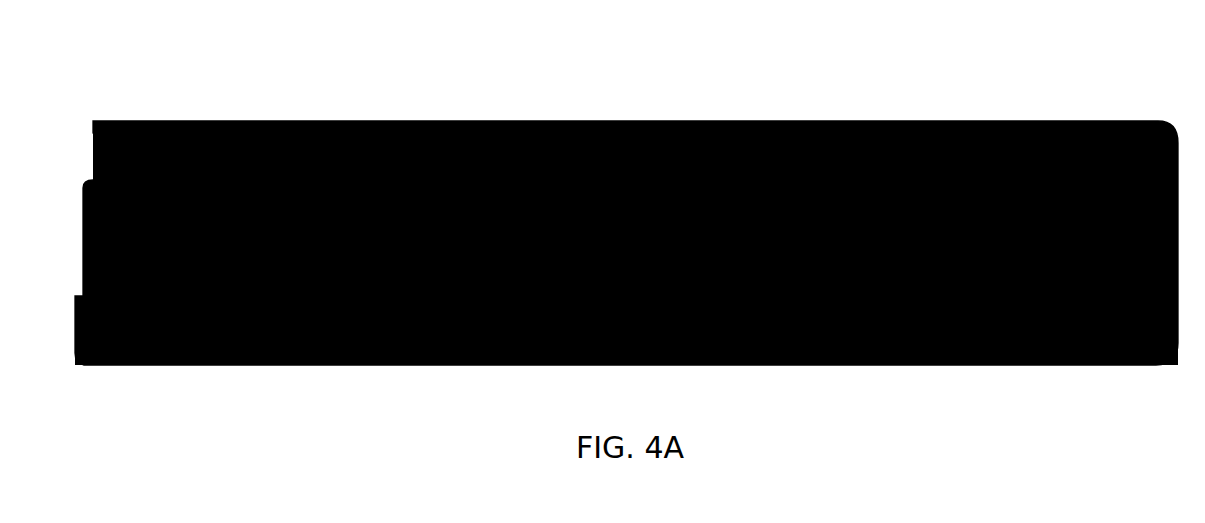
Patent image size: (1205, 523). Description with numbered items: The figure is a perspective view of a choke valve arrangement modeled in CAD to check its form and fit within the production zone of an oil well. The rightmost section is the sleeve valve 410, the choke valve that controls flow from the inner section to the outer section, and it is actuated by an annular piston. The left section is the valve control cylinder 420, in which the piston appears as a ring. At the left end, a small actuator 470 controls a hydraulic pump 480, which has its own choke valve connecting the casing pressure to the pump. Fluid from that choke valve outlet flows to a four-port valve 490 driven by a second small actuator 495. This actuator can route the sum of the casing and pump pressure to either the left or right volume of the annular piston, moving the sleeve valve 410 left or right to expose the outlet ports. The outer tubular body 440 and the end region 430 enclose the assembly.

The sleeve valve 410 is at (833, 179).
The valve control cylinder 420 is at (437, 139).
The end cap 430 is at (1152, 321).
The housing 440 is at (1036, 123).
The small actuator 470 is at (141, 125).
The hydraulic pump 480 is at (155, 290).
The 4-port valve 490 is at (256, 200).
The small actuator 495 is at (197, 125).